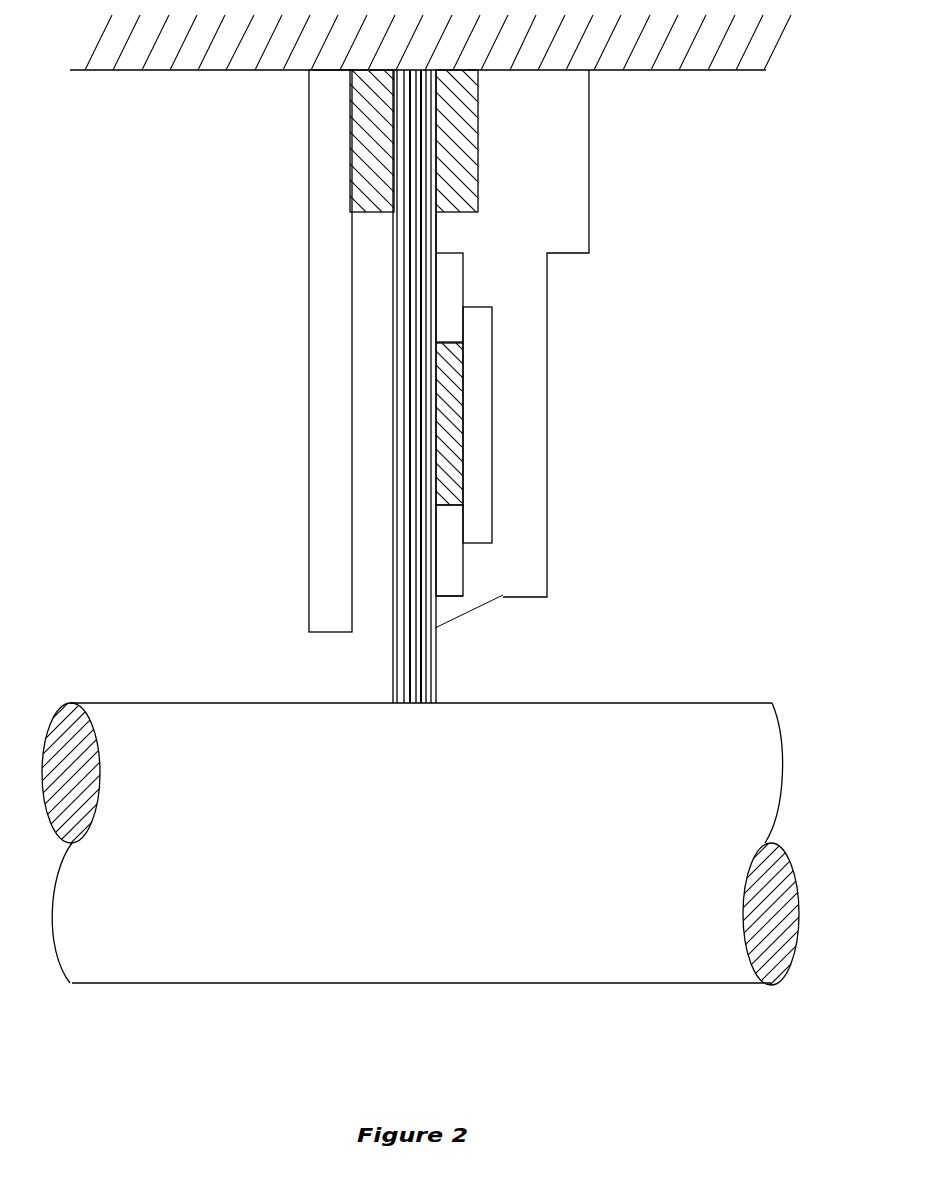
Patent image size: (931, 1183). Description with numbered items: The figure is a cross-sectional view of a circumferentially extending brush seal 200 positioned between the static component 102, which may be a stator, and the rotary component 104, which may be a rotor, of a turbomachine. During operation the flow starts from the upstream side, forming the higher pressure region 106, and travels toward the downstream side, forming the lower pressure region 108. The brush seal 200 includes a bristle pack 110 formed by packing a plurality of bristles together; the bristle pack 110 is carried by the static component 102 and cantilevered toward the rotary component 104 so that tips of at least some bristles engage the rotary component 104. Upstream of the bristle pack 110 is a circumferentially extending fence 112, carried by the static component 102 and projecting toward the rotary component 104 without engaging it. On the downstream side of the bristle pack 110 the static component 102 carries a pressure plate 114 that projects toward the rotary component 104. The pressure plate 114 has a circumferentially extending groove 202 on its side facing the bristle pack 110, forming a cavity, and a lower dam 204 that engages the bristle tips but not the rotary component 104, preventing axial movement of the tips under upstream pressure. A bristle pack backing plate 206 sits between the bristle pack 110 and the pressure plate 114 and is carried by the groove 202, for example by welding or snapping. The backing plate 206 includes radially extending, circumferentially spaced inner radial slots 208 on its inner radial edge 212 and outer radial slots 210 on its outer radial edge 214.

The static component 102 is at (192, 63).
The rotary component 104 is at (165, 713).
The higher pressure region 106 is at (152, 404).
The lower pressure region 108 is at (737, 414).
The bristle pack 110 is at (397, 510).
The circumferentially extending fence 112 is at (328, 327).
The pressure plate 114 is at (573, 142).
The brush seal 200 is at (479, 448).
The circumferentially extending groove 202 is at (478, 396).
The lower dam 204 is at (442, 642).
The bristle pack backing plate 206 is at (462, 485).
The inner radial slots 208 is at (448, 582).
The outer radial slots 210 is at (447, 290).
The inner radial edge 212 is at (450, 597).
The outer radial edge 214 is at (445, 250).